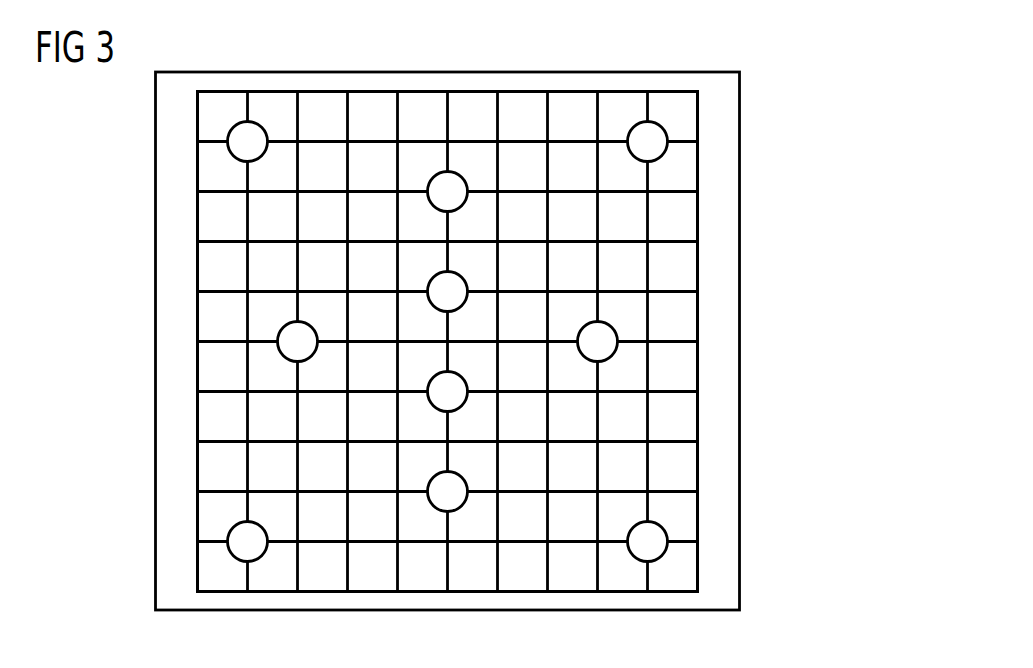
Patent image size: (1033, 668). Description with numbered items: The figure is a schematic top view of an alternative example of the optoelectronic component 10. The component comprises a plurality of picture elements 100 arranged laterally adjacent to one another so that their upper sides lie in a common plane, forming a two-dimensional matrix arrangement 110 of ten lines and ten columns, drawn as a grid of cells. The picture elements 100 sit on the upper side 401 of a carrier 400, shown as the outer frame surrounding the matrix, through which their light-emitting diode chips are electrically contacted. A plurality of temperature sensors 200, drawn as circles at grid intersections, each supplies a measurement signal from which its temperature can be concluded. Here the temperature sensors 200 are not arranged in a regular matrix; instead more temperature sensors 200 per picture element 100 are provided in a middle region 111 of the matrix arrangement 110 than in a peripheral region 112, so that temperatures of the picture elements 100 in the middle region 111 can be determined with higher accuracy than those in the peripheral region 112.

The optoelectronic component 10 is at (762, 46).
The picture elements 100 is at (272, 108).
The two-dimensional matrix arrangement 110 is at (383, 207).
The middle region 111 is at (460, 330).
The peripheral region 112 is at (672, 218).
The temperature sensors 200 is at (436, 292).
The carrier 400 is at (692, 72).
The upper side 401 is at (720, 98).